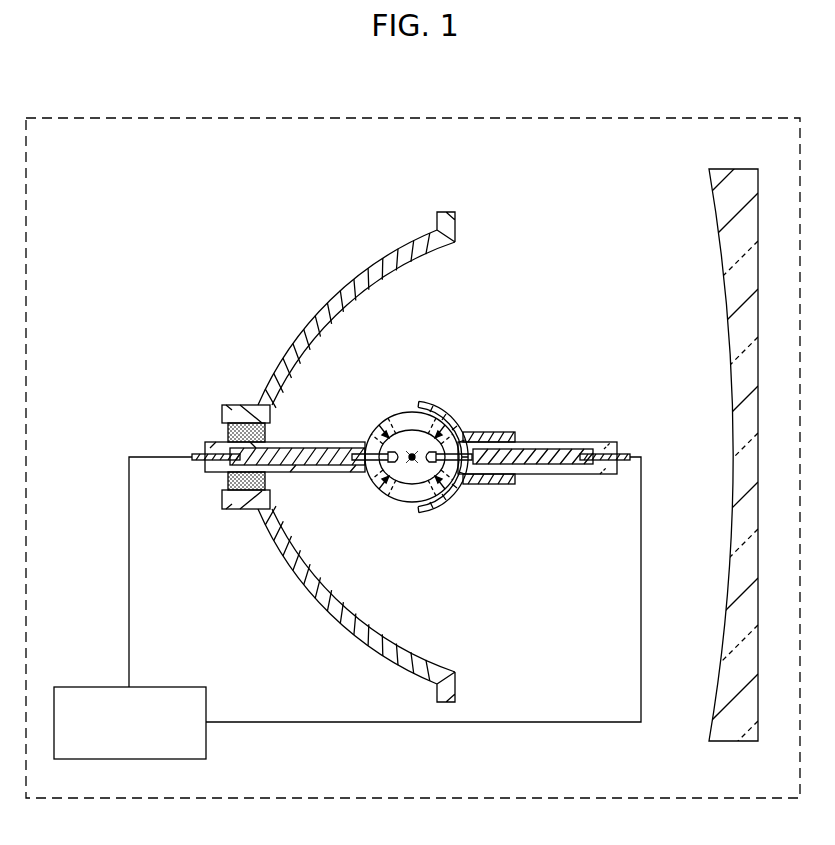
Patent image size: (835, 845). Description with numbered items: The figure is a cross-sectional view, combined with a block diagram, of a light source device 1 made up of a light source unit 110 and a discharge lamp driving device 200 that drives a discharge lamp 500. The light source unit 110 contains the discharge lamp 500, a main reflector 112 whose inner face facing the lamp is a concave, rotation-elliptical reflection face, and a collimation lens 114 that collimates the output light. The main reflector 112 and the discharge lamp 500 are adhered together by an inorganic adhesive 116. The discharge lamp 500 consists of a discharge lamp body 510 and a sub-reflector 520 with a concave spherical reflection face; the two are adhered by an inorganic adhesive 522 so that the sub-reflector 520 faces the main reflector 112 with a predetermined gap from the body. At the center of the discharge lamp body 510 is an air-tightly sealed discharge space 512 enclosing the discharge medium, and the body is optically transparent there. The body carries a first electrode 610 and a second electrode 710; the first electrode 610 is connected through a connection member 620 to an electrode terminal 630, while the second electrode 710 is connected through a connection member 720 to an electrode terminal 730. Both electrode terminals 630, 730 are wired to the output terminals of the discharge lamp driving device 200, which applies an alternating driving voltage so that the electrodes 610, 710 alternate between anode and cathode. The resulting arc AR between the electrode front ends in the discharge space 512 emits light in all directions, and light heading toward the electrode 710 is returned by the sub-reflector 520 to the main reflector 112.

The light source device 1 is at (630, 110).
The light source unit 110 is at (265, 228).
The main reflector 112 is at (377, 264).
The collimation lens 114 is at (718, 212).
The inorganic adhesive 116 is at (227, 427).
The discharge lamp driving device 200 is at (172, 687).
The discharge lamp 500 is at (535, 353).
The discharge lamp body 510 is at (412, 460).
The discharge space 512 is at (403, 484).
The sub-reflector 520 is at (494, 476).
The inorganic adhesive 522 is at (517, 477).
The first electrode 610 is at (389, 470).
The connection member 620 is at (297, 459).
The electrode terminal 630 is at (200, 452).
The second electrode 710 is at (433, 446).
The connection member 720 is at (525, 426).
The electrode terminal 730 is at (610, 448).
The arc AR is at (422, 432).